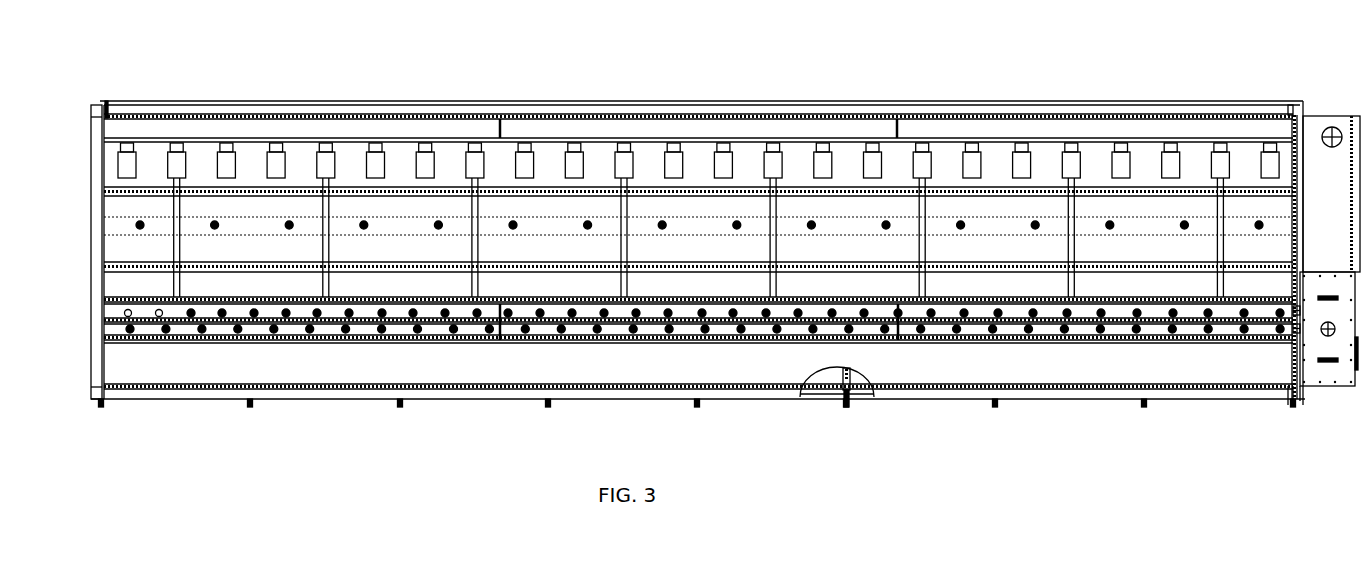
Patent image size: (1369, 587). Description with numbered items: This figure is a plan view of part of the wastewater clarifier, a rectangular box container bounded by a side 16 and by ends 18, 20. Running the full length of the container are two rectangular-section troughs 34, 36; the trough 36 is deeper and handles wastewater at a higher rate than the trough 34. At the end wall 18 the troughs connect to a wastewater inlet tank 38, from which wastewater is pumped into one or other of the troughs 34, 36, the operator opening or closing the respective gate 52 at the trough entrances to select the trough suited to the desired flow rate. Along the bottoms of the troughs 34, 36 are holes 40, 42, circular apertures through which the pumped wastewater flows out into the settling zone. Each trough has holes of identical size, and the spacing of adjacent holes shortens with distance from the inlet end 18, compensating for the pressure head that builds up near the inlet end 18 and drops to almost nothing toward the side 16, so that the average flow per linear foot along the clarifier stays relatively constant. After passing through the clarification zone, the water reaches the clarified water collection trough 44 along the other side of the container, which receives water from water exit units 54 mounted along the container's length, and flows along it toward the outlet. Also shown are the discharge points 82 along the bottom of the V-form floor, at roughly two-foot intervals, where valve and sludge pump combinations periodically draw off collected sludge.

The side 16 is at (1168, 108).
The end wall 18 is at (1303, 140).
The end 20 is at (97, 198).
The trough 34 is at (713, 333).
The trough 36 is at (622, 312).
The wastewater inlet tank 38 is at (1333, 340).
The holes 40 is at (950, 331).
The holes 42 is at (1067, 314).
The outlet trough 44 is at (968, 128).
The gate 52 is at (1290, 316).
The water exit units 54 is at (325, 165).
The discharge points 82 is at (885, 225).